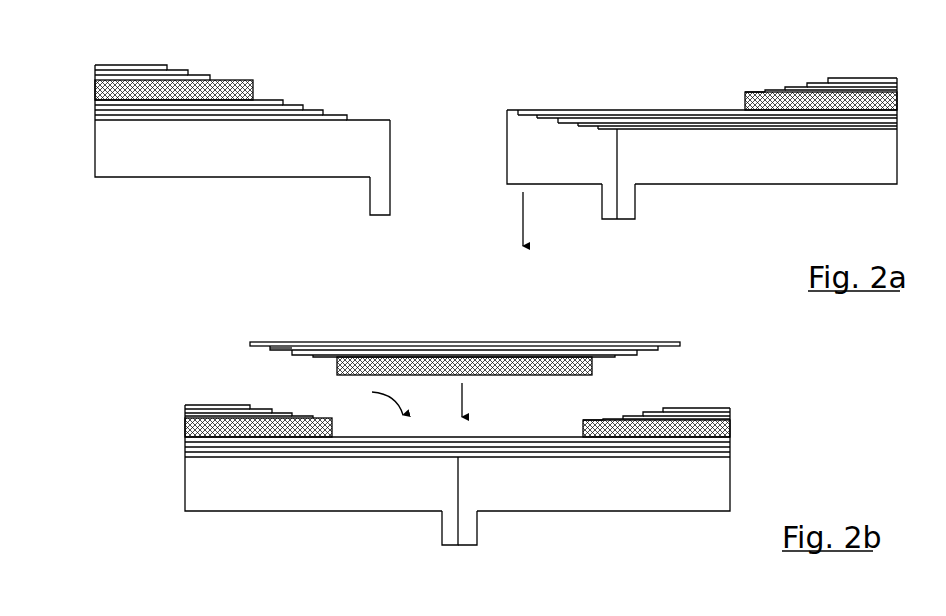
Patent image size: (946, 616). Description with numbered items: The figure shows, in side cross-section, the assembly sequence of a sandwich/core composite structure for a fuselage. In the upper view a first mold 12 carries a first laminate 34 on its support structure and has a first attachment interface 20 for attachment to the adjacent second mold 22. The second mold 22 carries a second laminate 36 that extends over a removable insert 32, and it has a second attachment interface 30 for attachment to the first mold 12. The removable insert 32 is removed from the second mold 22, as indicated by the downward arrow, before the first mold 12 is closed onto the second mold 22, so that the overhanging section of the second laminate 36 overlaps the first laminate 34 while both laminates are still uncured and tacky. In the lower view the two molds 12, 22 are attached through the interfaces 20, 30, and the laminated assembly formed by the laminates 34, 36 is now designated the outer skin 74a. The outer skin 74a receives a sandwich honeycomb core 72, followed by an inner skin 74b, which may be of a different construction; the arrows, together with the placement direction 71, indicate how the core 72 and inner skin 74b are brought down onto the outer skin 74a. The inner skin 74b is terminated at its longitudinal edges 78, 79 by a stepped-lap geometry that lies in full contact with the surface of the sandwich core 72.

In FIG. 2a, the first mold 12 is at (237, 153).
In FIG. 2b, the first mold 12 is at (262, 490).
In FIG. 2a, the first attachment interface 20 is at (377, 195).
In FIG. 2b, the first attachment interface 20 is at (450, 527).
In FIG. 2a, the second mold 22 is at (757, 165).
In FIG. 2b, the second mold 22 is at (563, 488).
In FIG. 2a, the second attachment interface 30 is at (627, 207).
In FIG. 2b, the second attachment interface 30 is at (472, 527).
In FIG. 2a, the removable insert 32 is at (572, 165).
In FIG. 2a, the first laminate 34 is at (260, 107).
In FIG. 2a, the second laminate 36 is at (685, 120).
In FIG. 2b, the placement direction 71 is at (402, 400).
In FIG. 2b, the sandwich honeycomb core 72 is at (547, 375).
In FIG. 2b, the outer skin 74a is at (710, 447).
In FIG. 2b, the inner skin 74b is at (493, 346).
In FIG. 2b, the longitudinal edge of inner skin 78 is at (660, 350).
In FIG. 2b, the longitudinal edge of inner skin 79 is at (285, 348).